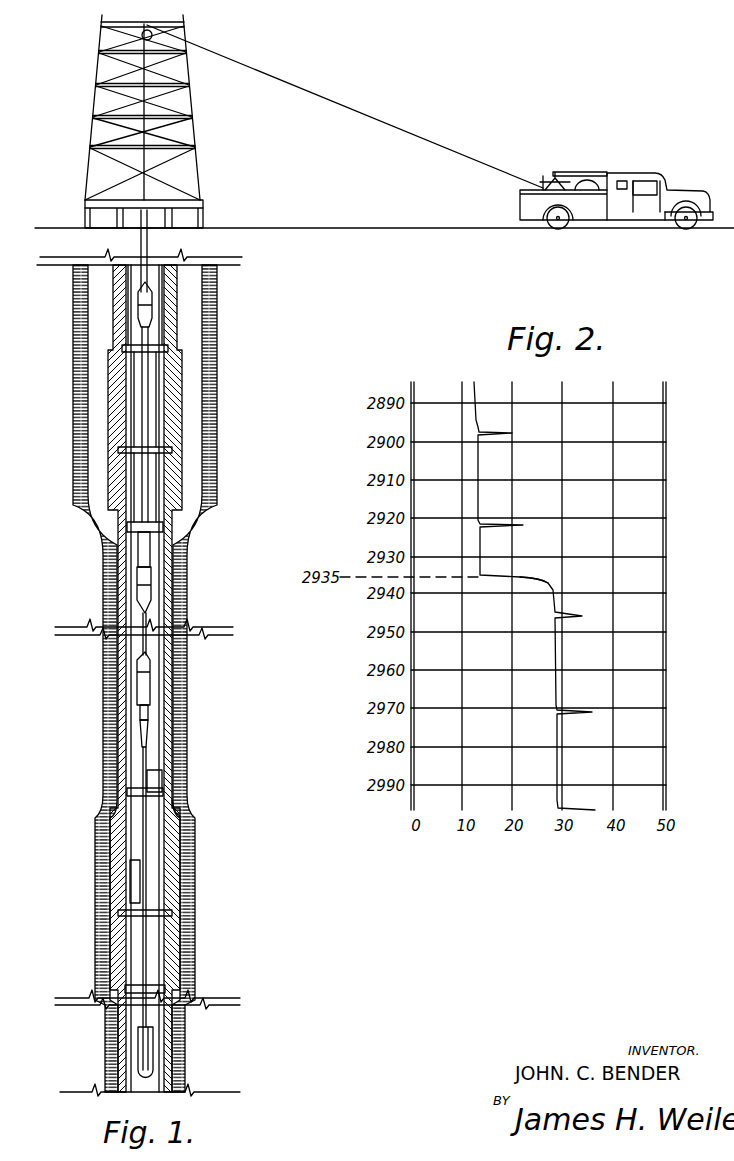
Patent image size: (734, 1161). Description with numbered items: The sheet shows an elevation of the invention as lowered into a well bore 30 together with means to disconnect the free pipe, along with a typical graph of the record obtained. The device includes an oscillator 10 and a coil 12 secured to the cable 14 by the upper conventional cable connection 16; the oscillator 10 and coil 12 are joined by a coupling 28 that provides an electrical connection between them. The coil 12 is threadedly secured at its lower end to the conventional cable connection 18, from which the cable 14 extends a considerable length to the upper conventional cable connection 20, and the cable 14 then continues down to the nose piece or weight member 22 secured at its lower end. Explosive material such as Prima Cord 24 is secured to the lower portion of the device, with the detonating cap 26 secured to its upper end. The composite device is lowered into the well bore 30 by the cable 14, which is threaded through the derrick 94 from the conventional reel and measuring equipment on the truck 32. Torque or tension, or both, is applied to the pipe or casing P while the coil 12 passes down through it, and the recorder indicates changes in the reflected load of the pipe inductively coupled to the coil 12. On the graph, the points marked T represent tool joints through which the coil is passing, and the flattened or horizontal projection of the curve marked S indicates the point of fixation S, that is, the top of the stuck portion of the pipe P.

In FIG. 1, the oscillator 10 is at (143, 407).
In FIG. 1, the coil 12 is at (143, 543).
In FIG. 1, the cable 14 is at (377, 119).
In FIG. 1, the upper conventional cable connection 16 is at (143, 340).
In FIG. 1, the conventional cable connection 18 is at (147, 592).
In FIG. 1, the upper conventional cable connection 20 is at (143, 680).
In FIG. 1, the nose piece or weight member 22 is at (152, 1048).
In FIG. 1, the explosive material (Prima Cord) 24 is at (148, 730).
In FIG. 1, the detonating cap 26 is at (150, 710).
In FIG. 1, the coupling 28 is at (145, 517).
In FIG. 1, the well bore 30 is at (195, 422).
In FIG. 1, the truck with reel and measuring equipment 32 is at (520, 194).
In FIG. 1, the derrick 94 is at (192, 97).
In FIG. 1, the pipe or casing P is at (163, 285).
In FIG. 1, the tool joints T is at (130, 388).
In FIG. 2, the tool joints T is at (512, 428).
In FIG. 1, the point of fixation S is at (178, 810).
In FIG. 2, the point of fixation S is at (540, 572).